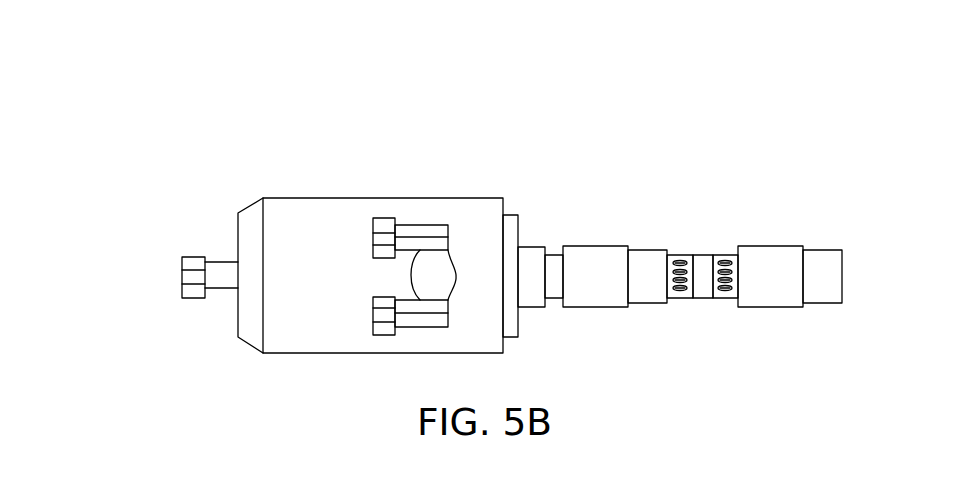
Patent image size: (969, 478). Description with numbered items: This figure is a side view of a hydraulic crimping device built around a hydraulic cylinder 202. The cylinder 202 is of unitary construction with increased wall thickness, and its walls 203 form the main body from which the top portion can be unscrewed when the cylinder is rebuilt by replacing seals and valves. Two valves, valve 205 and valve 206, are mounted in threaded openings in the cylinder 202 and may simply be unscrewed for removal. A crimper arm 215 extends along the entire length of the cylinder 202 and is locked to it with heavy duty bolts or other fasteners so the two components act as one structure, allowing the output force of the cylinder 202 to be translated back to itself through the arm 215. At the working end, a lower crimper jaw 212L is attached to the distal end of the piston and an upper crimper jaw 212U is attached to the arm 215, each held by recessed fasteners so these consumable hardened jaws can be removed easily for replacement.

The cylinder 202 is at (164, 138).
The walls 203 is at (327, 223).
The valve 205 is at (193, 256).
The valve 206 is at (425, 222).
The lower crimper jaw 212L is at (675, 253).
The upper crimper jaw 212U is at (723, 253).
The crimper arm 215 is at (818, 250).